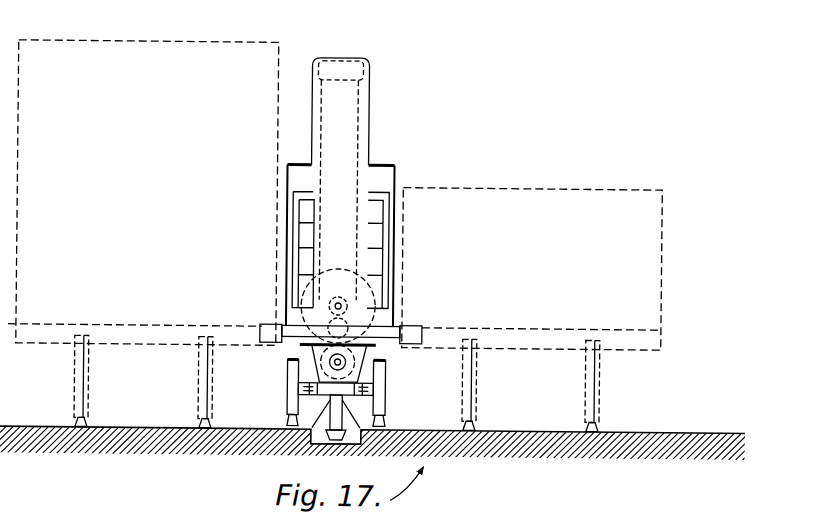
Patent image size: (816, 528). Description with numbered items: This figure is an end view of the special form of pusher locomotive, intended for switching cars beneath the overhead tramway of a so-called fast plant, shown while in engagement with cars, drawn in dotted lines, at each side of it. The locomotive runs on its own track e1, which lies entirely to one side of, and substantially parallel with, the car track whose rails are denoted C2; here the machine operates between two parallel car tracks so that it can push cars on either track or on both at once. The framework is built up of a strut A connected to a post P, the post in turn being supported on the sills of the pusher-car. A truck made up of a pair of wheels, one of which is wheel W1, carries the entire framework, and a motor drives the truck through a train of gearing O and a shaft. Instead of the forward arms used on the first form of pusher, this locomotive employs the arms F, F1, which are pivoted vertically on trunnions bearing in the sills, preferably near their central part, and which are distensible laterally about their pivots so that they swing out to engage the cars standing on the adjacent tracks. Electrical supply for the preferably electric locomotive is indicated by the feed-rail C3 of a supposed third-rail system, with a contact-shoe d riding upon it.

The strut A is at (366, 60).
The post P is at (357, 163).
The arm F is at (264, 336).
The arm F1 is at (414, 327).
The train of gearing O is at (322, 357).
The wheel W1 is at (286, 378).
The feed-rail C3 is at (381, 397).
The track e1 is at (287, 421).
The rail of the approach track C2 is at (210, 425).
The contact-shoe d is at (300, 453).